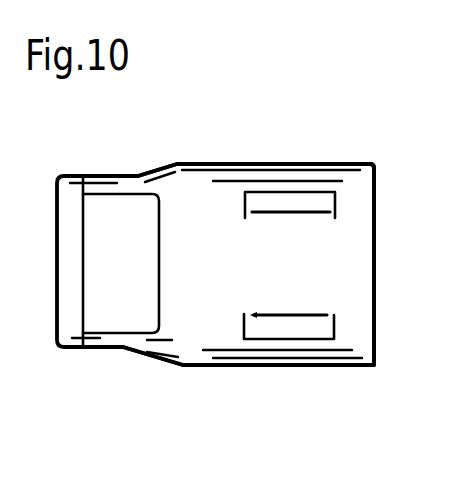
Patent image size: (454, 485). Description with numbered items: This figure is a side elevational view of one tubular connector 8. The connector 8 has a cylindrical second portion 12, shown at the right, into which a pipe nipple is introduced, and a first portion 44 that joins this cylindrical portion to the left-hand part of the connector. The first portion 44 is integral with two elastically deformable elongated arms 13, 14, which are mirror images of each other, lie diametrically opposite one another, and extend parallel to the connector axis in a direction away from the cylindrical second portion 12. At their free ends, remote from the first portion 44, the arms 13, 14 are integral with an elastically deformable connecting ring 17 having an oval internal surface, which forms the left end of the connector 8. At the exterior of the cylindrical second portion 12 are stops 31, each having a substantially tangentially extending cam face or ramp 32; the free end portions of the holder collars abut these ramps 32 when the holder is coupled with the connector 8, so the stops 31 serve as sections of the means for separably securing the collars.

The tubular connector 8 is at (260, 146).
The cylindrical second portion 12 is at (362, 161).
The elastically deformable arm 13 is at (103, 173).
The elastically deformable arm 14 is at (106, 350).
The connecting ring 17 is at (73, 193).
The stop 31 is at (349, 199).
The cam face or ramp 32 is at (302, 190).
The first portion 44 is at (158, 170).